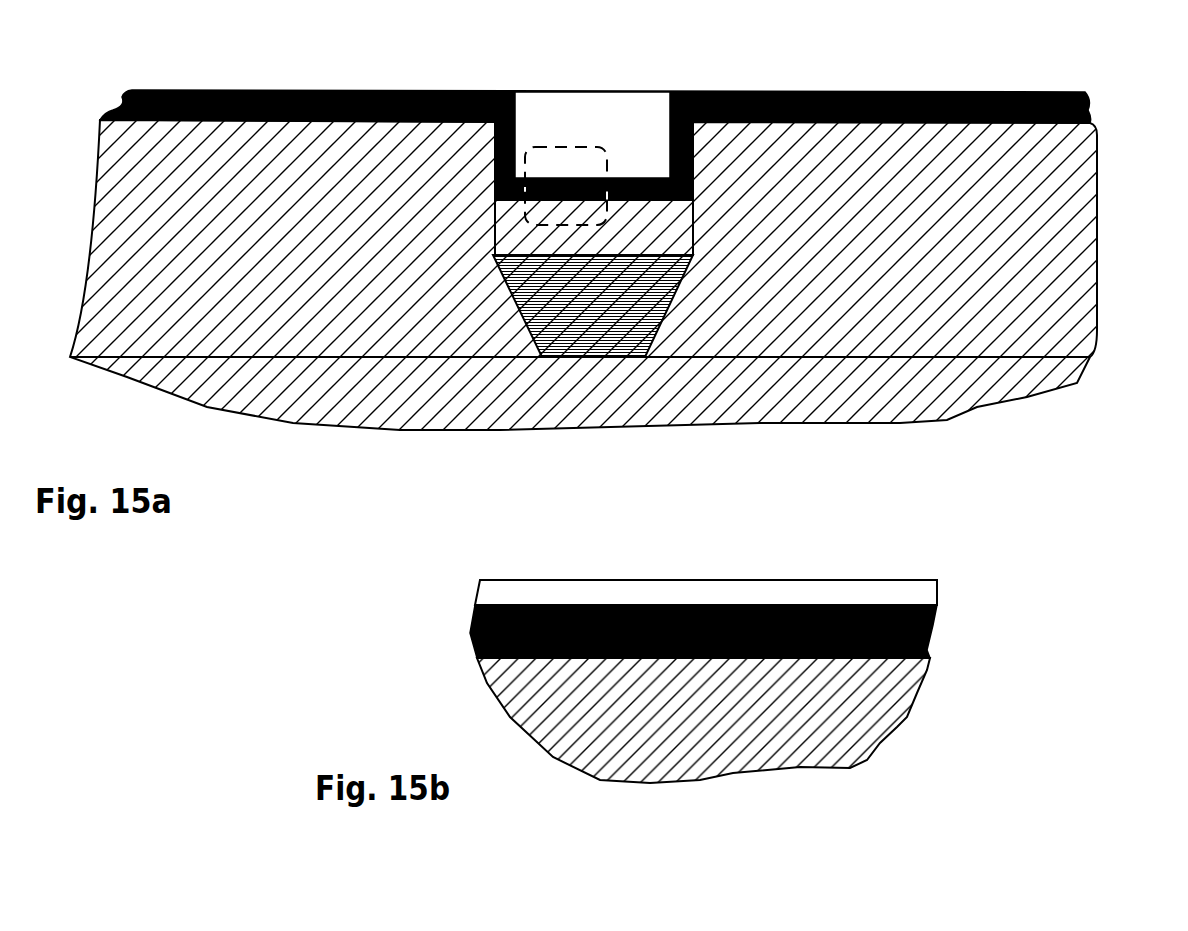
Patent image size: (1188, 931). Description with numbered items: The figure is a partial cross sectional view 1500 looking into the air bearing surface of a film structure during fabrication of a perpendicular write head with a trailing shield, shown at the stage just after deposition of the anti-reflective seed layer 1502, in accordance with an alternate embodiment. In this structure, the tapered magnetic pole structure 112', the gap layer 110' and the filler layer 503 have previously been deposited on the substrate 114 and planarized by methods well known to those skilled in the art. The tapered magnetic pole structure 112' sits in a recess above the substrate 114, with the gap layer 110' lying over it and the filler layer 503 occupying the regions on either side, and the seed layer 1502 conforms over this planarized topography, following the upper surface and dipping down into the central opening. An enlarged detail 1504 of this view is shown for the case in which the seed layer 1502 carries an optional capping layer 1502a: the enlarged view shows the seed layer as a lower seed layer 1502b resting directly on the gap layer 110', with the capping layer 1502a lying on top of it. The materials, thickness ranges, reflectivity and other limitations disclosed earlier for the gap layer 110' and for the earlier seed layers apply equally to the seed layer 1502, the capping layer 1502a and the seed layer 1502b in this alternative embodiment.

In FIG. 15A, the partial cross sectional view 1500 is at (607, 78).
In FIG. 15A, the anti-reflective seed layer 1502 is at (990, 93).
In FIG. 15B, the capping layer 1502a is at (535, 580).
In FIG. 15B, the seed layer 1502b is at (728, 649).
In FIG. 15A, the detail 1504 is at (565, 145).
In FIG. 15B, the detail 1504 is at (970, 567).
In FIG. 15A, the filler layer 503 is at (303, 293).
In FIG. 15A, the gap layer 110' is at (594, 227).
In FIG. 15B, the gap layer 110' is at (703, 720).
In FIG. 15A, the tapered magnetic pole structure 112' is at (593, 306).
In FIG. 15A, the substrate 114 is at (595, 417).